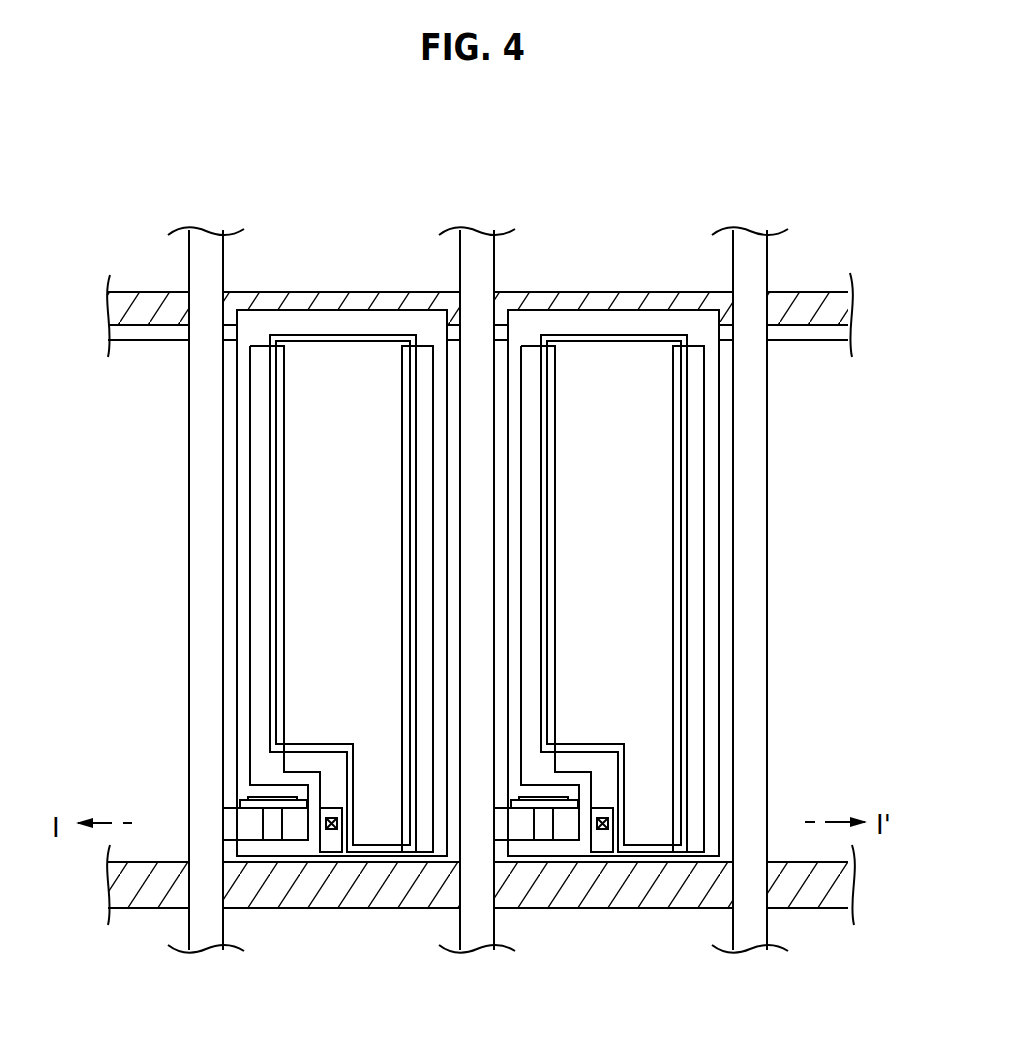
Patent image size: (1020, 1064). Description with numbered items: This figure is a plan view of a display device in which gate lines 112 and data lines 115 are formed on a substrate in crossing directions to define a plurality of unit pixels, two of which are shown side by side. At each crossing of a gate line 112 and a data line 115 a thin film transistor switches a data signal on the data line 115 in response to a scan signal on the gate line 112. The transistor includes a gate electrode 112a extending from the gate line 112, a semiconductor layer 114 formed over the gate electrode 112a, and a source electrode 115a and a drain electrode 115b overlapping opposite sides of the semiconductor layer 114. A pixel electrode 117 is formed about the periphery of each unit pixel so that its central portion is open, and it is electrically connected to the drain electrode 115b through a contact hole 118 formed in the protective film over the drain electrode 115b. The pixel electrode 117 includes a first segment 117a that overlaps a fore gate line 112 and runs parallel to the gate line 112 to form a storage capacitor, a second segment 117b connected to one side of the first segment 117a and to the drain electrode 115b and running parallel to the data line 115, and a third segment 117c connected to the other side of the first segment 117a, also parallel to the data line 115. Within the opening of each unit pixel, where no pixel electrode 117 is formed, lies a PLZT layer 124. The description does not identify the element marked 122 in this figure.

The gate line 112 is at (392, 905).
The gate electrode 112a is at (252, 800).
The semiconductor layer 114 is at (272, 842).
The data line 115 is at (203, 665).
The source electrode 115a is at (233, 827).
The drain electrode 115b is at (296, 842).
The pixel electrode 117 is at (343, 325).
The first segment 117a is at (394, 320).
The second segment 117b is at (243, 472).
The third segment 117c is at (455, 507).
The contact hole 118 is at (331, 831).
The passivation pattern 122 is at (250, 597).
The PLZT layer 124 is at (280, 550).